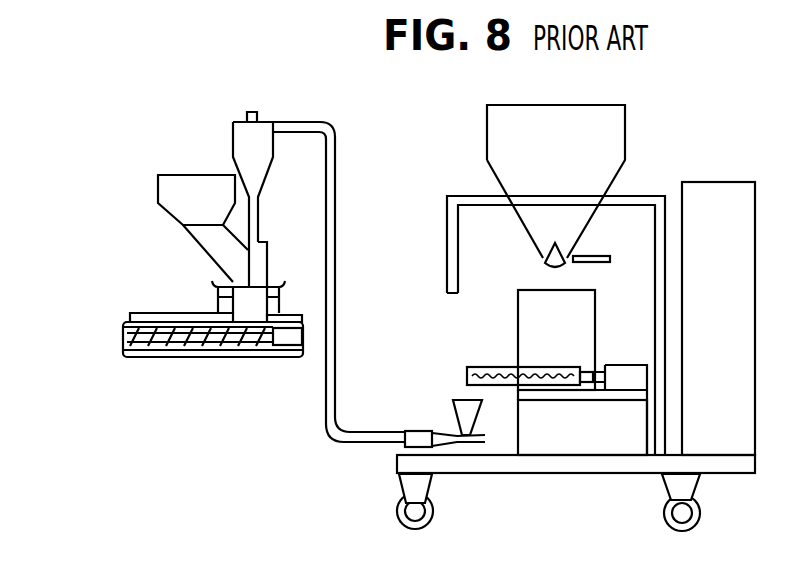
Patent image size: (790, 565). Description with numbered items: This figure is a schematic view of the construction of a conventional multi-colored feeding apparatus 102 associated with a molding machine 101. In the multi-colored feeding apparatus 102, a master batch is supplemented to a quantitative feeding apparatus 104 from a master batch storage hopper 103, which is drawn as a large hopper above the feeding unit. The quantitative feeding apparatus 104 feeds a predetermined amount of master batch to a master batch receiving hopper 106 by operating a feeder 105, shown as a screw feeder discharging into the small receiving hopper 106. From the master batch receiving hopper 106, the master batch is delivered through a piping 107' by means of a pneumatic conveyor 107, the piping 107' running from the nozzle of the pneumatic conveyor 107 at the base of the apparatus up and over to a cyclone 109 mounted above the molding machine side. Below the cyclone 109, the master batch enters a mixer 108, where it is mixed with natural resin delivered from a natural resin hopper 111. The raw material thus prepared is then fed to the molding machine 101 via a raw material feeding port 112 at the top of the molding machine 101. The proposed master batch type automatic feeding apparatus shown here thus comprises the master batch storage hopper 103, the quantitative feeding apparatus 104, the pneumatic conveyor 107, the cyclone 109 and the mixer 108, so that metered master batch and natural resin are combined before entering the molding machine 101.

The molding machine 101 is at (163, 313).
The multi-colored feeding apparatus 102 is at (632, 158).
The master batch storage hopper 103 is at (628, 110).
The quantitative feeding apparatus 104 is at (595, 326).
The feeder 105 is at (485, 367).
The master batch receiving hopper 106 is at (452, 400).
The pneumatic conveyor 107 is at (428, 418).
The piping 107' is at (349, 282).
The mixer 108 is at (247, 262).
The cyclone 109 is at (233, 140).
The natural resin hopper 111 is at (158, 190).
The raw material feeding port 112 is at (232, 284).